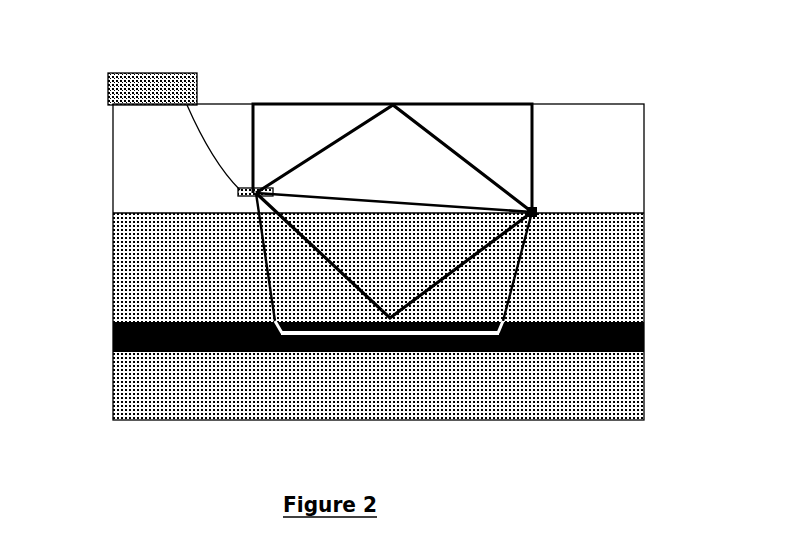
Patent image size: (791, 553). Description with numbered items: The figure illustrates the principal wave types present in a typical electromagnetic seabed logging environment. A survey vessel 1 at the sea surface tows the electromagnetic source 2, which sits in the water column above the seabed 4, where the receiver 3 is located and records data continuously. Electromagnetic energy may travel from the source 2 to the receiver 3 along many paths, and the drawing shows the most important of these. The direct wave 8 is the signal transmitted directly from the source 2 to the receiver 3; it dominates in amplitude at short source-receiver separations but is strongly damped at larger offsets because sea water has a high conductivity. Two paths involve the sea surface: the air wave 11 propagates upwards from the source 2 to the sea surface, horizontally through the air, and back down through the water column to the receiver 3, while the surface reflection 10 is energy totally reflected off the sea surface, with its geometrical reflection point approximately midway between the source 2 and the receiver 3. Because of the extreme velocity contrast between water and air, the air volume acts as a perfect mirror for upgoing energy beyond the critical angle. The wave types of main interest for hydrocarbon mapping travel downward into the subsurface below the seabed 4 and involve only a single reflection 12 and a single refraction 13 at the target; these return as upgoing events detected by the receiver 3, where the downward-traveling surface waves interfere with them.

The survey vessel 1 is at (123, 82).
The electromagnetic source 2 is at (238, 191).
The receiver 3 is at (537, 212).
The seabed 4 is at (625, 322).
The direct wave 8 is at (483, 207).
The surface reflection 10 is at (438, 136).
The air wave 11 is at (295, 102).
The reflection 12 is at (343, 280).
The refraction 13 is at (427, 334).